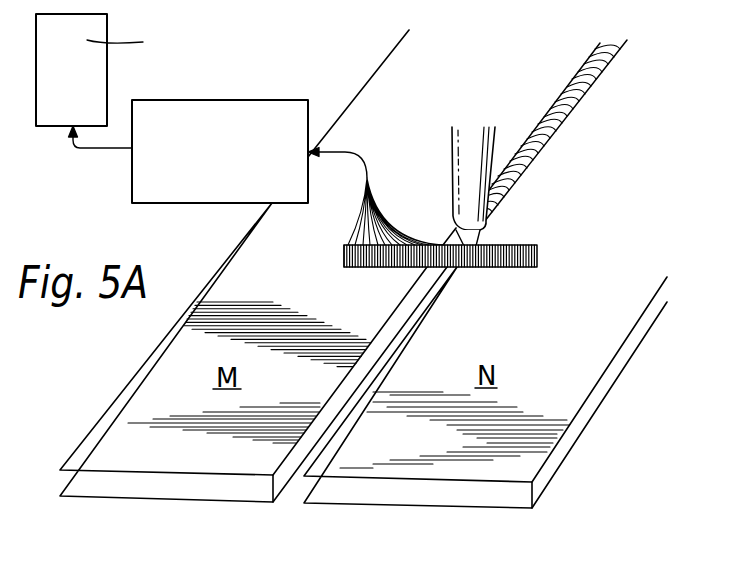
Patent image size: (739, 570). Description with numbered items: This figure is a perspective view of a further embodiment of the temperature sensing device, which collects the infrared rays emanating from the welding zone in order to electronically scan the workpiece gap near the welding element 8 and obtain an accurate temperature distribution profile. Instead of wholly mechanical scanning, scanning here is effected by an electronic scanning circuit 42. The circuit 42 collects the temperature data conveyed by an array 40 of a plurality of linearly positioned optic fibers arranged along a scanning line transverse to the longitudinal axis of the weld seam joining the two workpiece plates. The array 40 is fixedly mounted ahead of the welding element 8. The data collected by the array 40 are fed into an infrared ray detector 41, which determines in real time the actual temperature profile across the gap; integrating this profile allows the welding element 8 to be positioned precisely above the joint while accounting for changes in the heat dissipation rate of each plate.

The welding element 8 is at (477, 163).
The array of optic fibers 40 is at (488, 268).
The infrared ray detector 41 is at (210, 182).
The electronic scanning circuit 42 is at (87, 78).